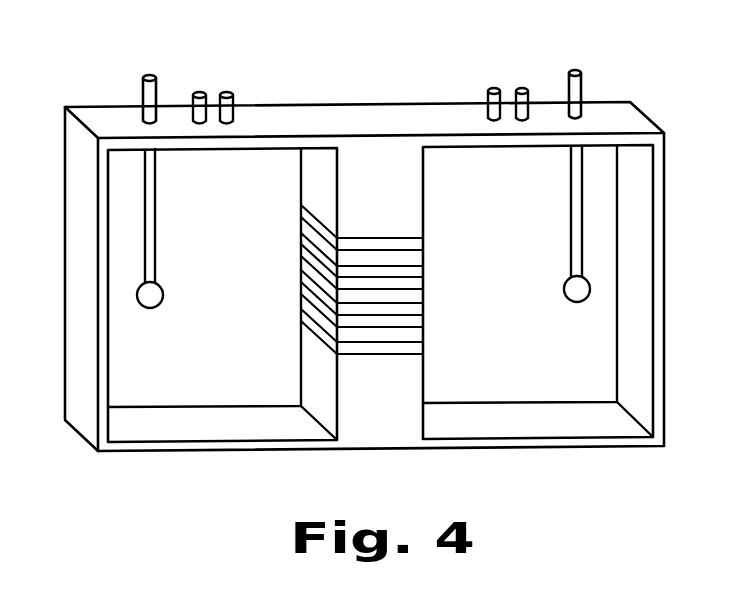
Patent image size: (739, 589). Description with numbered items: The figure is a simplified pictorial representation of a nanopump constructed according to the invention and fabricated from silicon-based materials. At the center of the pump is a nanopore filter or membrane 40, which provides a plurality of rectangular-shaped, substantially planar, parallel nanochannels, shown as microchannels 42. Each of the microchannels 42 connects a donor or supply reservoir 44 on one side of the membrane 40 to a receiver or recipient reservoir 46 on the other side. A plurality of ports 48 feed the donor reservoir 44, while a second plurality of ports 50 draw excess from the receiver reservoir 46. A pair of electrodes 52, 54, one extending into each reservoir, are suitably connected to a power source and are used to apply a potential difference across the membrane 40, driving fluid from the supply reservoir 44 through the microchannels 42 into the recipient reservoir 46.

The nanopore filter or membrane 40 is at (380, 157).
The microchannels 42 is at (427, 350).
The donor or supply reservoir 44 is at (132, 368).
The receiver or recipient reservoir 46 is at (601, 378).
The ports 48 is at (199, 92).
The second plurality of ports 50 is at (494, 88).
The electrode 52 is at (138, 291).
The electrode 54 is at (585, 285).